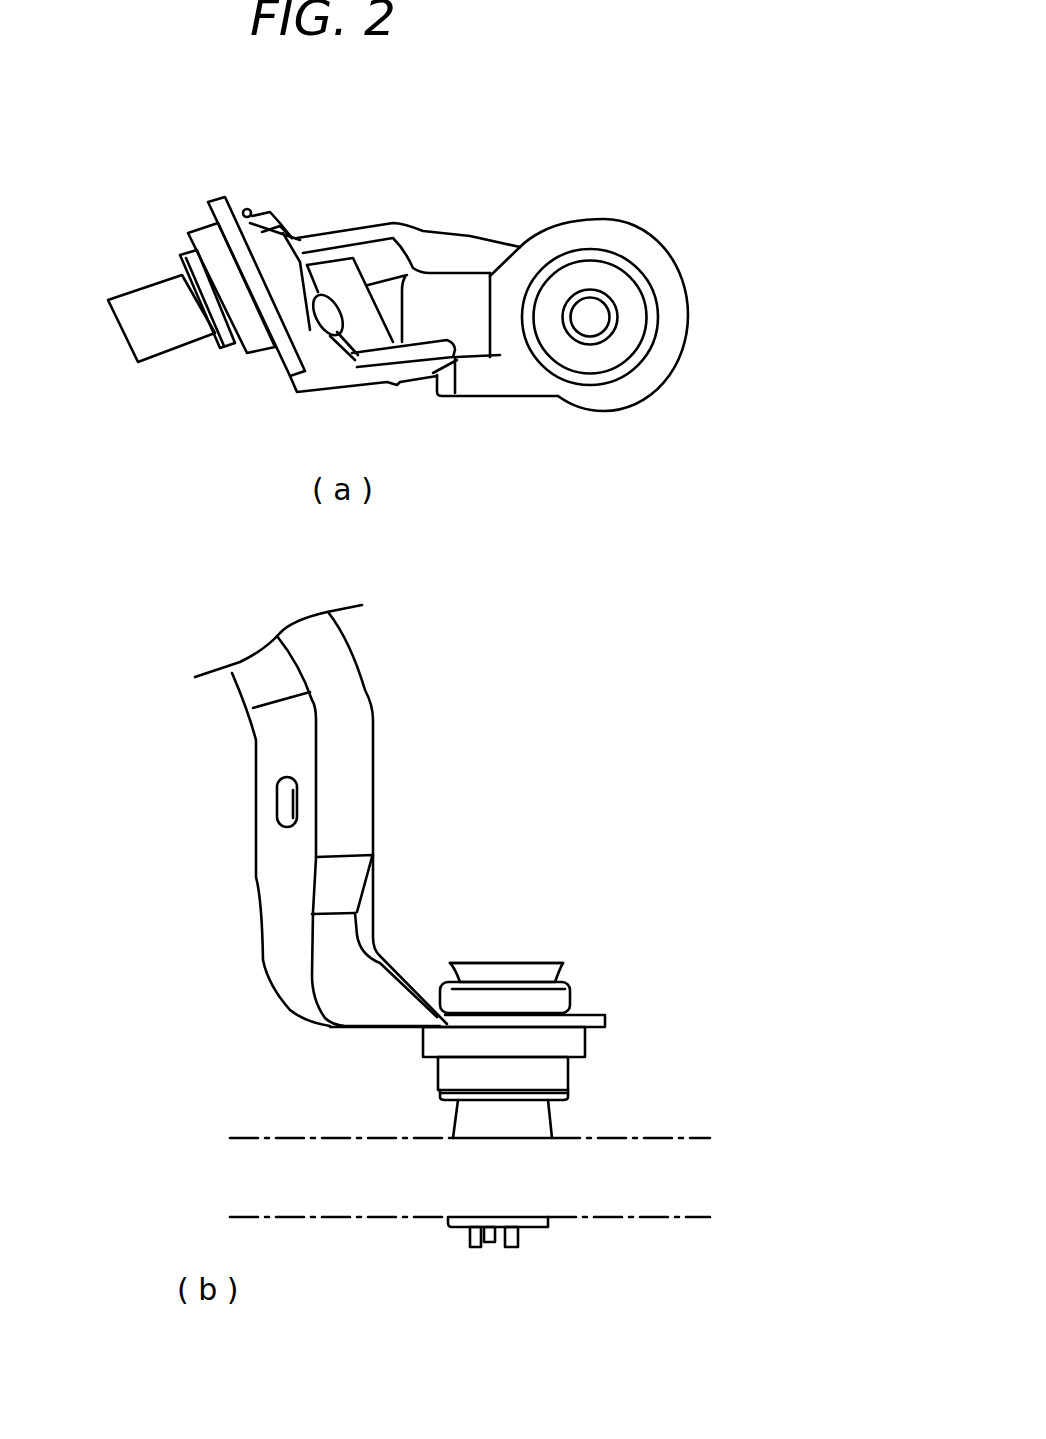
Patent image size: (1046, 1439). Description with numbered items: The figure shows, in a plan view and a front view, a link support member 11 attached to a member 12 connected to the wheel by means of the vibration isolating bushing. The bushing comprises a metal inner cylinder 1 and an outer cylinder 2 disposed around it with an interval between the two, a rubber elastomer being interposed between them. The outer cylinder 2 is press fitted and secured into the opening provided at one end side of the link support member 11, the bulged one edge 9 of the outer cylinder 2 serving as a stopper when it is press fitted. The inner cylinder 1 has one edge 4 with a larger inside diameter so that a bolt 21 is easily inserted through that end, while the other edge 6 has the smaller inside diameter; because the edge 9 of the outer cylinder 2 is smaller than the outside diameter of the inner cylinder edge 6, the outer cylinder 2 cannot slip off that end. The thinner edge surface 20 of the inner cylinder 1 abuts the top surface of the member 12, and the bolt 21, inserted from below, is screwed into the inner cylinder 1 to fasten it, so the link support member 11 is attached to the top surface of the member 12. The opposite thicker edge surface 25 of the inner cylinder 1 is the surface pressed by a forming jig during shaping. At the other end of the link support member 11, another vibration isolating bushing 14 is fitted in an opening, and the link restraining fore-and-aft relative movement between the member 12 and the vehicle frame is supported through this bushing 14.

The inner cylinder 1 is at (619, 293).
The outer cylinder 2 is at (596, 258).
The one edge 4 is at (532, 1117).
The other edge 6 is at (528, 975).
The one edge 9 is at (565, 998).
The link support member 11 is at (430, 181).
The member 12 is at (356, 1157).
The vibration isolating bushing 14 is at (270, 277).
The one edge surface 20 is at (527, 1140).
The bolt 21 is at (592, 318).
The thicker edge surface 25 is at (466, 962).